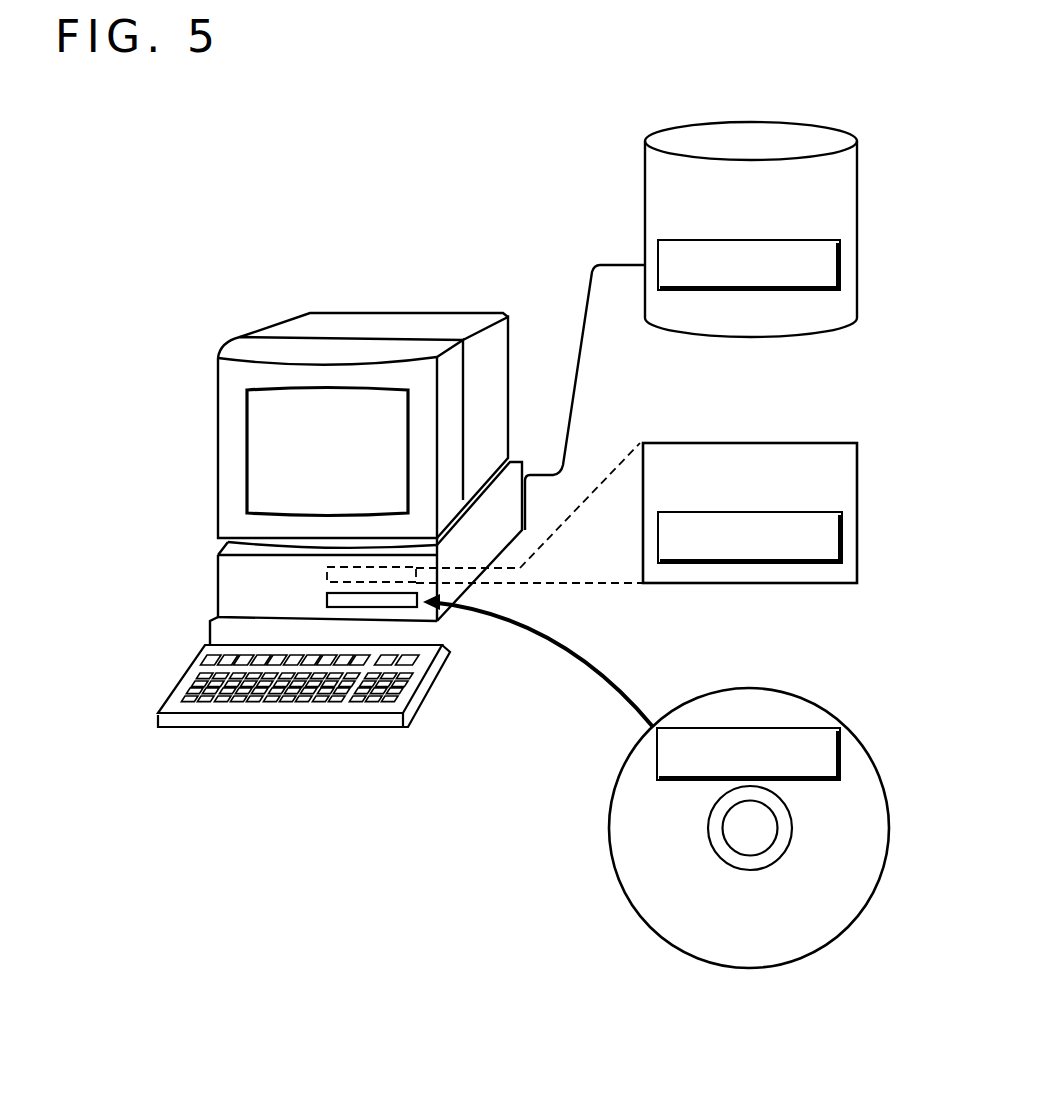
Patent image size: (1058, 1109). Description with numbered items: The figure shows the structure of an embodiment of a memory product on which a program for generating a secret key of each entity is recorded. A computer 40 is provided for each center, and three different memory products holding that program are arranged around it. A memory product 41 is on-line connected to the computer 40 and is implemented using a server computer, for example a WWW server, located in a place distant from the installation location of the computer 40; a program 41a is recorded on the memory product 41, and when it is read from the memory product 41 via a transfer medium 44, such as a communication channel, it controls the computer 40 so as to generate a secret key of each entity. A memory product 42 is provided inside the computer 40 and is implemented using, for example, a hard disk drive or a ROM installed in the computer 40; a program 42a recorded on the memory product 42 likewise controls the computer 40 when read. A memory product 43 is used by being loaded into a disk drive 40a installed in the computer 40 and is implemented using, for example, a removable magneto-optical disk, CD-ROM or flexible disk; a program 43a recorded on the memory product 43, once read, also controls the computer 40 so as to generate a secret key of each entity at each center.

The computer 40 is at (382, 317).
The disk drive 40a is at (437, 621).
The memory product 41 is at (858, 168).
The program 41a is at (697, 240).
The memory product 42 is at (792, 442).
The program 42a is at (672, 511).
The memory product 43 is at (708, 690).
The program 43a is at (785, 728).
The transfer medium 44 is at (575, 367).